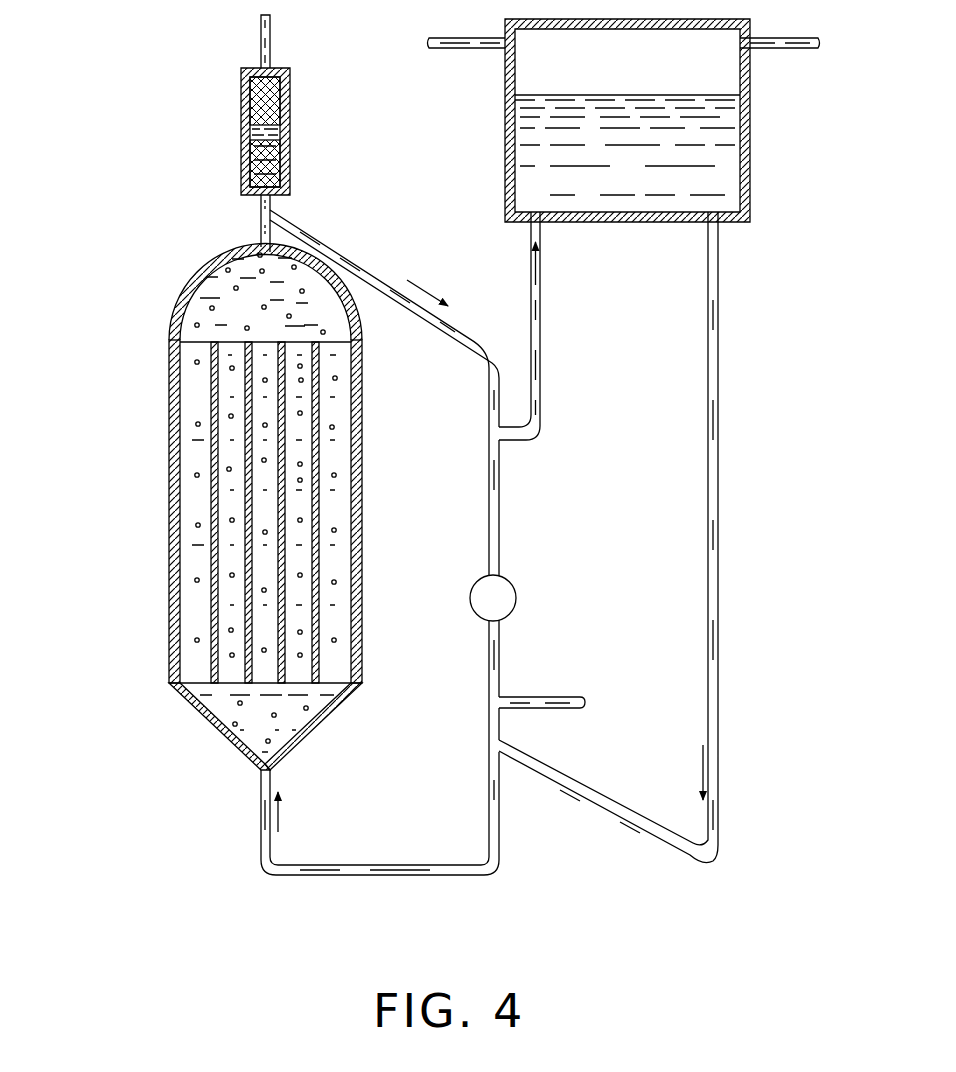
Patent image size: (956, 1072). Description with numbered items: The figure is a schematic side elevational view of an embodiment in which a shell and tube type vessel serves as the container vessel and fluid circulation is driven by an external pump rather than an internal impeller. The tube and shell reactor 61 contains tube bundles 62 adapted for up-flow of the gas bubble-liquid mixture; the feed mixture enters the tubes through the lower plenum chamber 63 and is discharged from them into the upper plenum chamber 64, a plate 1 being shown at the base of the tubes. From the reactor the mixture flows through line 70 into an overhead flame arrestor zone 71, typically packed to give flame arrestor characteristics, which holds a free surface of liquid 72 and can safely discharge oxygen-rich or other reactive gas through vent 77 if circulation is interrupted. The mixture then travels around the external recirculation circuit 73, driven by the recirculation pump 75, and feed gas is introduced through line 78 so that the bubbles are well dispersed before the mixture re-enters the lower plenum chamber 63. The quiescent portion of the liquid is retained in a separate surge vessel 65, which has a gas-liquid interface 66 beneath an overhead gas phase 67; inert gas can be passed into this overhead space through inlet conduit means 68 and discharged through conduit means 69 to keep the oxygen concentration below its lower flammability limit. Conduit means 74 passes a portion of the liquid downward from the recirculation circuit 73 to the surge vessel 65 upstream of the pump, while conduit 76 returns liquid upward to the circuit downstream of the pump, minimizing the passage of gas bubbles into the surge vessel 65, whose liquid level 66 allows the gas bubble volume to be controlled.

The perforated plate 1 is at (317, 697).
The tube and shell reactor 61 is at (366, 512).
The tube bundles 62 is at (351, 423).
The lower plenum chamber 63 is at (219, 740).
The upper plenum chamber 64 is at (198, 280).
The surge vessel 65 is at (752, 148).
The gas-liquid interface 66 is at (728, 95).
The overhead gas phase 67 is at (630, 42).
The inlet conduit means 68 is at (463, 38).
The conduit means 69 is at (768, 38).
The line 70 is at (261, 233).
The flame arrestor zone 71 is at (241, 155).
The free surface of liquid 72 is at (277, 126).
The external recirculation circuit 73 is at (372, 270).
The conduit means 74 is at (541, 326).
The recirculation pump 75 is at (517, 593).
The conduit 76 is at (719, 548).
The vent 77 is at (271, 37).
The line 78 is at (522, 697).